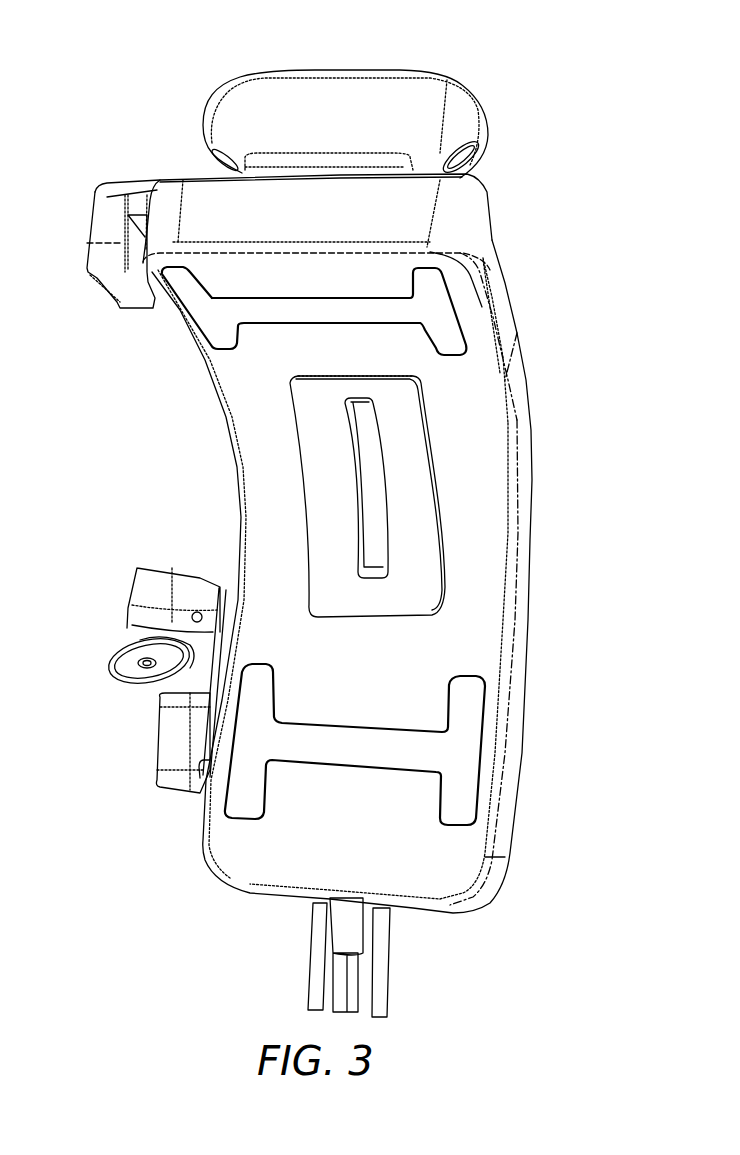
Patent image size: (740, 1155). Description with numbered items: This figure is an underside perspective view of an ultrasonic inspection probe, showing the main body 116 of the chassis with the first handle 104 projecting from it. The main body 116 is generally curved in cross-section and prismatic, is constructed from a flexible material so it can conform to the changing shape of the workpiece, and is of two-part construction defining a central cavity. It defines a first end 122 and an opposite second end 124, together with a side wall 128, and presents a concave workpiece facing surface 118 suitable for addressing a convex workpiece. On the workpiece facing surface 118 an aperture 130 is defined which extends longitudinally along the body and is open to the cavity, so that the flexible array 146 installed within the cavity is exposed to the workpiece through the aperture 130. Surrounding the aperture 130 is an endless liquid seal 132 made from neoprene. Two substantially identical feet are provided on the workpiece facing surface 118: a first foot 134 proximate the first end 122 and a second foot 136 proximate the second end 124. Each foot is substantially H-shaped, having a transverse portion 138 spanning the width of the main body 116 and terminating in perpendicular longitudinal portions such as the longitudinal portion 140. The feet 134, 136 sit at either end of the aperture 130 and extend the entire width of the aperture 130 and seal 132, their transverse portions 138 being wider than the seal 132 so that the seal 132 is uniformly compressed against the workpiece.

The first handle 104 is at (419, 56).
The first end 122 is at (418, 202).
The side wall 128 is at (493, 267).
The longitudinal portion 140 is at (437, 302).
The first foot 134 is at (207, 313).
The transverse portion 138 is at (280, 317).
The endless liquid seal 132 is at (313, 450).
The aperture 130 is at (372, 462).
The flexible array 146 is at (373, 540).
The workpiece facing surface 118 is at (497, 535).
The main body 116 is at (493, 603).
The second foot 136 is at (237, 802).
The second end 124 is at (410, 913).